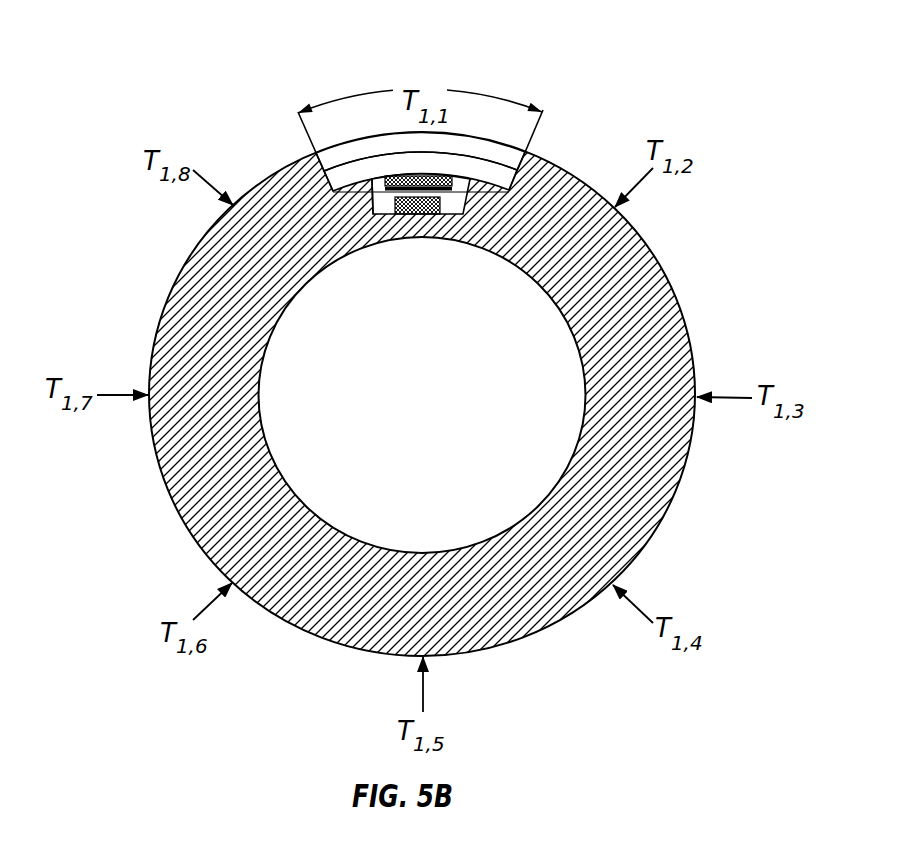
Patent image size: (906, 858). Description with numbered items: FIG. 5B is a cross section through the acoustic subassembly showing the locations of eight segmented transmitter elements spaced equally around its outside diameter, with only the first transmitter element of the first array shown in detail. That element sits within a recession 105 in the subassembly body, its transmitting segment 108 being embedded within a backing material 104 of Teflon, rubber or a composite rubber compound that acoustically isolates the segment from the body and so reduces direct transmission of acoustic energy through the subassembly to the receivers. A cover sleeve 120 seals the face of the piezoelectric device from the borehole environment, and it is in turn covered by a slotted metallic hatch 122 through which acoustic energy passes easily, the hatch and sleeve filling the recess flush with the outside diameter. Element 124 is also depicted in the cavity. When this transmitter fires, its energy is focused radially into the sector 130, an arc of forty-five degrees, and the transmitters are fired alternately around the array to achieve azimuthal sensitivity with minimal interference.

The sector 130 is at (420, 88).
The slotted metallic hatch 122 is at (417, 141).
The cover sleeve 120 is at (427, 152).
The backing material 104 is at (461, 210).
The recession 105 is at (368, 216).
The transmitting segment 108 is at (441, 192).
The substrate block 124 is at (398, 216).